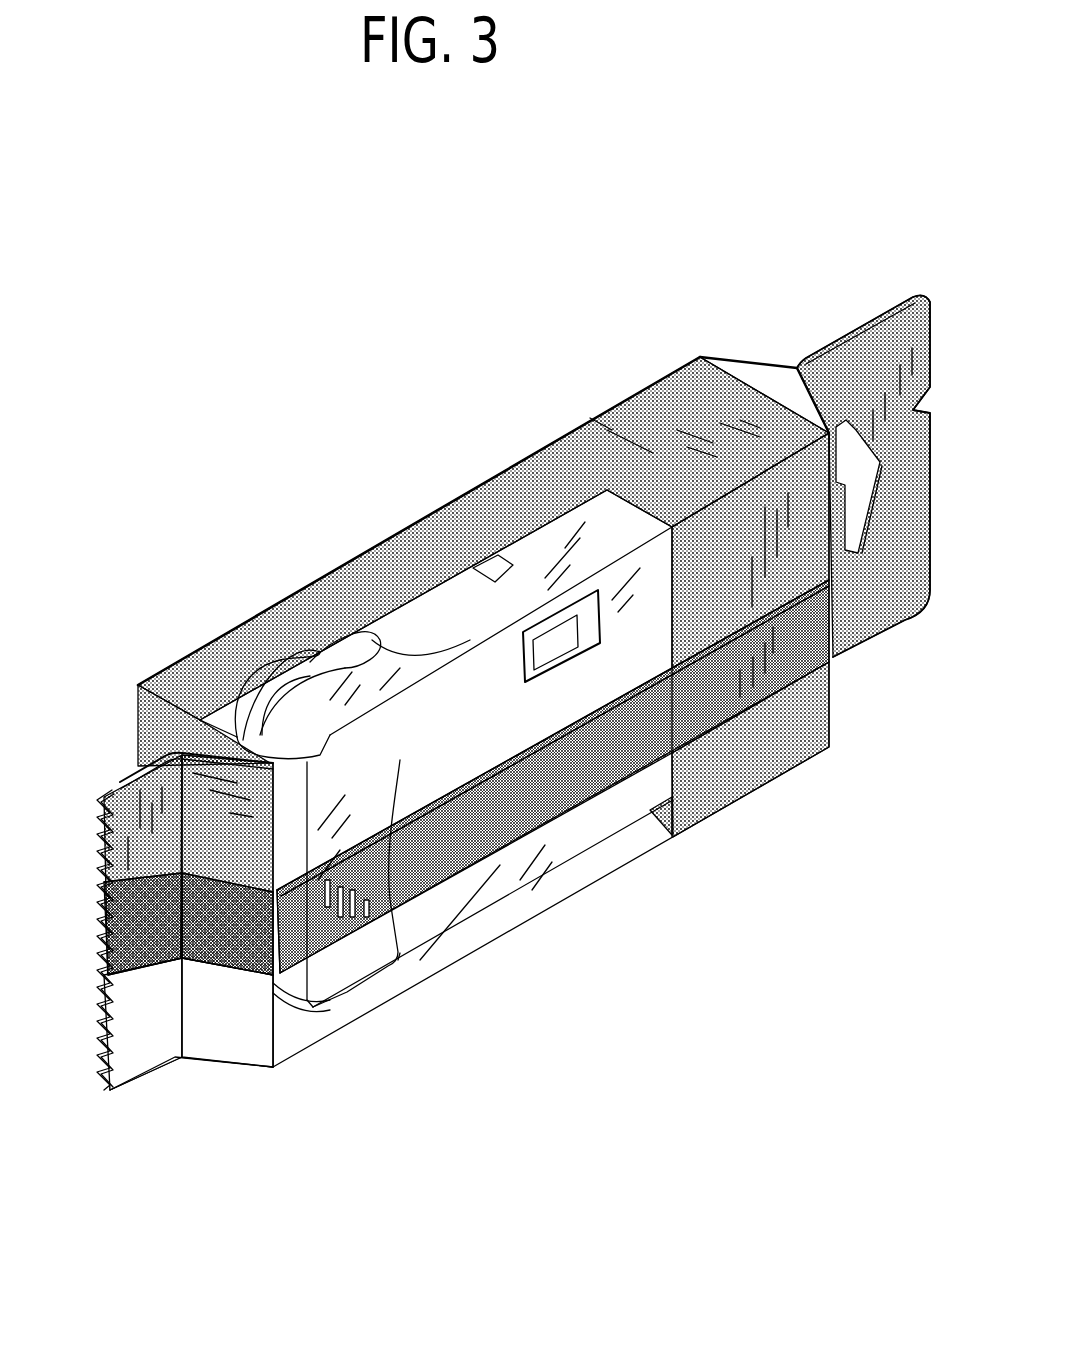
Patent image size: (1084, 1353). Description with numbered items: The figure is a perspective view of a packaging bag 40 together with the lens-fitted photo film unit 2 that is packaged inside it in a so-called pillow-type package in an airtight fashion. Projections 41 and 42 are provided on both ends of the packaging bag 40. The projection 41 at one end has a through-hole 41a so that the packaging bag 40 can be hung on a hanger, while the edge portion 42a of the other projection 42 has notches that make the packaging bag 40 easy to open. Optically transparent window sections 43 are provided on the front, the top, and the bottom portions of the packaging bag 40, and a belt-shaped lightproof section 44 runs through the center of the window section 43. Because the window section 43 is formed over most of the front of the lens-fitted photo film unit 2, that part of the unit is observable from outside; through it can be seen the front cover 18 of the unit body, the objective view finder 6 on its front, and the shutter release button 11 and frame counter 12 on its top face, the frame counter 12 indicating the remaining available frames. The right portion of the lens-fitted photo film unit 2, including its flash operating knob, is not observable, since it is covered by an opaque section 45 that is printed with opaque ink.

The lens-fitted photo film unit 2 is at (436, 935).
The objective view finder 6 is at (573, 620).
The shutter release button 11 is at (345, 655).
The frame counter 12 is at (486, 563).
The front cover 18 is at (523, 863).
The packaging bag 40 is at (602, 388).
The projection 41 is at (880, 380).
The through-hole 41a is at (868, 555).
The projection 42 is at (133, 798).
The edge portion 42a is at (100, 1043).
The window section 43 is at (487, 703).
The lightproof section 44 is at (560, 770).
The opaque section 45 is at (733, 768).